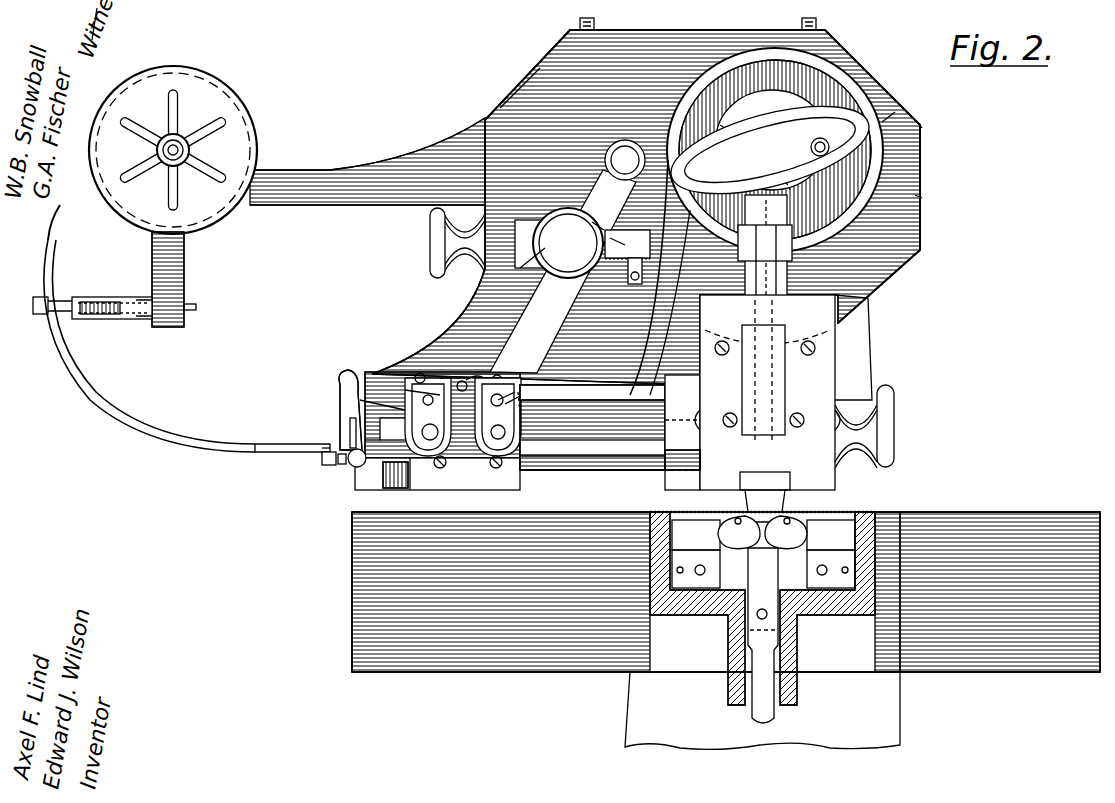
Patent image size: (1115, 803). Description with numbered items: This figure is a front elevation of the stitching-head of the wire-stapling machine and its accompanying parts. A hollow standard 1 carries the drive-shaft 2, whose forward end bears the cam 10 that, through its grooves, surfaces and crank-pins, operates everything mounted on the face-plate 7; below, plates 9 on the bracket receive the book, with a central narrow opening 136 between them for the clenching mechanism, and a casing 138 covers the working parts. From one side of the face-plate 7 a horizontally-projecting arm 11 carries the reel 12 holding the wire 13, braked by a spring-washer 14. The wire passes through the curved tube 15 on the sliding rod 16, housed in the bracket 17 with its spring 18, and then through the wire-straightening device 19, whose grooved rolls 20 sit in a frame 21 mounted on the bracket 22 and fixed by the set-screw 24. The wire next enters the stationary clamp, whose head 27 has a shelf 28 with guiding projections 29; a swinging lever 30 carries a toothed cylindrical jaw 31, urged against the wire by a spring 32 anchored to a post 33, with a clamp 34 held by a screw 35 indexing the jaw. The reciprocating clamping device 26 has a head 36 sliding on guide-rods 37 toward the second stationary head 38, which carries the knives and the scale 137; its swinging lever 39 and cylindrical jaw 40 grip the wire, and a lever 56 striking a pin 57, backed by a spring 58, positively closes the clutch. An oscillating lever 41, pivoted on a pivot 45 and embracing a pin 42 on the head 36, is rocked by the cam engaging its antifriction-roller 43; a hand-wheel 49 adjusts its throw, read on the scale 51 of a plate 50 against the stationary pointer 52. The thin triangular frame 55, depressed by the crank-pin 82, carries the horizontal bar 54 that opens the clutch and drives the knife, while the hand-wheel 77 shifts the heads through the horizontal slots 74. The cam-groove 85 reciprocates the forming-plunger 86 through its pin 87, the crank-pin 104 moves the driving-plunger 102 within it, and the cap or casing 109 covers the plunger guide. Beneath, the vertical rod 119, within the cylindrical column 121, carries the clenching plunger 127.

The hollow standard 1 is at (900, 708).
The drive-shaft 2 is at (905, 112).
The face-plate 7 is at (632, 58).
The plates 9 is at (975, 535).
The cam 10 is at (778, 198).
The horizontally-projecting arm 11 is at (318, 198).
The reel 12 is at (191, 155).
The wire 13 is at (58, 208).
The spring-washer 14 is at (206, 172).
The curved tube 15 is at (80, 392).
The arm or rod 16 is at (60, 313).
The tube or bracket 17 is at (112, 316).
The spring 18 is at (132, 297).
The wire-straightening device 19 is at (352, 468).
The rolls 20 is at (345, 428).
The frame 21 is at (348, 464).
The bracket 22 is at (402, 475).
The set-screw 24 is at (322, 462).
The reciprocating clamping device 26 is at (510, 470).
The block or head 27 is at (482, 468).
The shelf 28 is at (440, 470).
The projections 29 is at (395, 462).
The swinging lever 30 is at (380, 410).
The cylindrical jaw 31 is at (372, 402).
The spring 32 is at (426, 392).
The post 33 is at (440, 432).
The clamp 34 is at (416, 376).
The screw 35 is at (458, 384).
The head 36 is at (530, 472).
The guide-rods 37 is at (605, 460).
The second stationary head 38 is at (680, 472).
The swinging lever 39 is at (496, 376).
The cylindrical jaw 40 is at (498, 402).
The oscillating lever 41 is at (598, 210).
The pin 42 is at (528, 370).
The antifriction-roller 43 is at (512, 86).
The pivot 45 is at (540, 255).
The hand-wheel 49 is at (430, 228).
The plate 50 is at (598, 226).
The scale 51 is at (612, 240).
The stationary pointer 52 is at (640, 258).
The horizontal bar 54 is at (628, 448).
The triangular frame 55 is at (582, 246).
The lever 56 is at (480, 378).
The pin 57 is at (468, 375).
The spring 58 is at (500, 382).
The horizontal slots 74 is at (338, 400).
The hand-wheel 77 is at (895, 404).
The crank-pin 82 is at (773, 140).
The cam-groove 85 is at (715, 110).
The forming-plunger 86 is at (844, 259).
The pin 87 is at (860, 290).
The driving-plunger 102 is at (924, 200).
The crank-pin 104 is at (822, 144).
The cap or casing 109 is at (828, 372).
The vertical rod 119 is at (770, 712).
The cylindrical column 121 is at (728, 690).
The reciprocating plunger 127 is at (825, 514).
The central narrow opening 136 is at (760, 512).
The scale 137 is at (745, 480).
The casing 138 is at (924, 130).